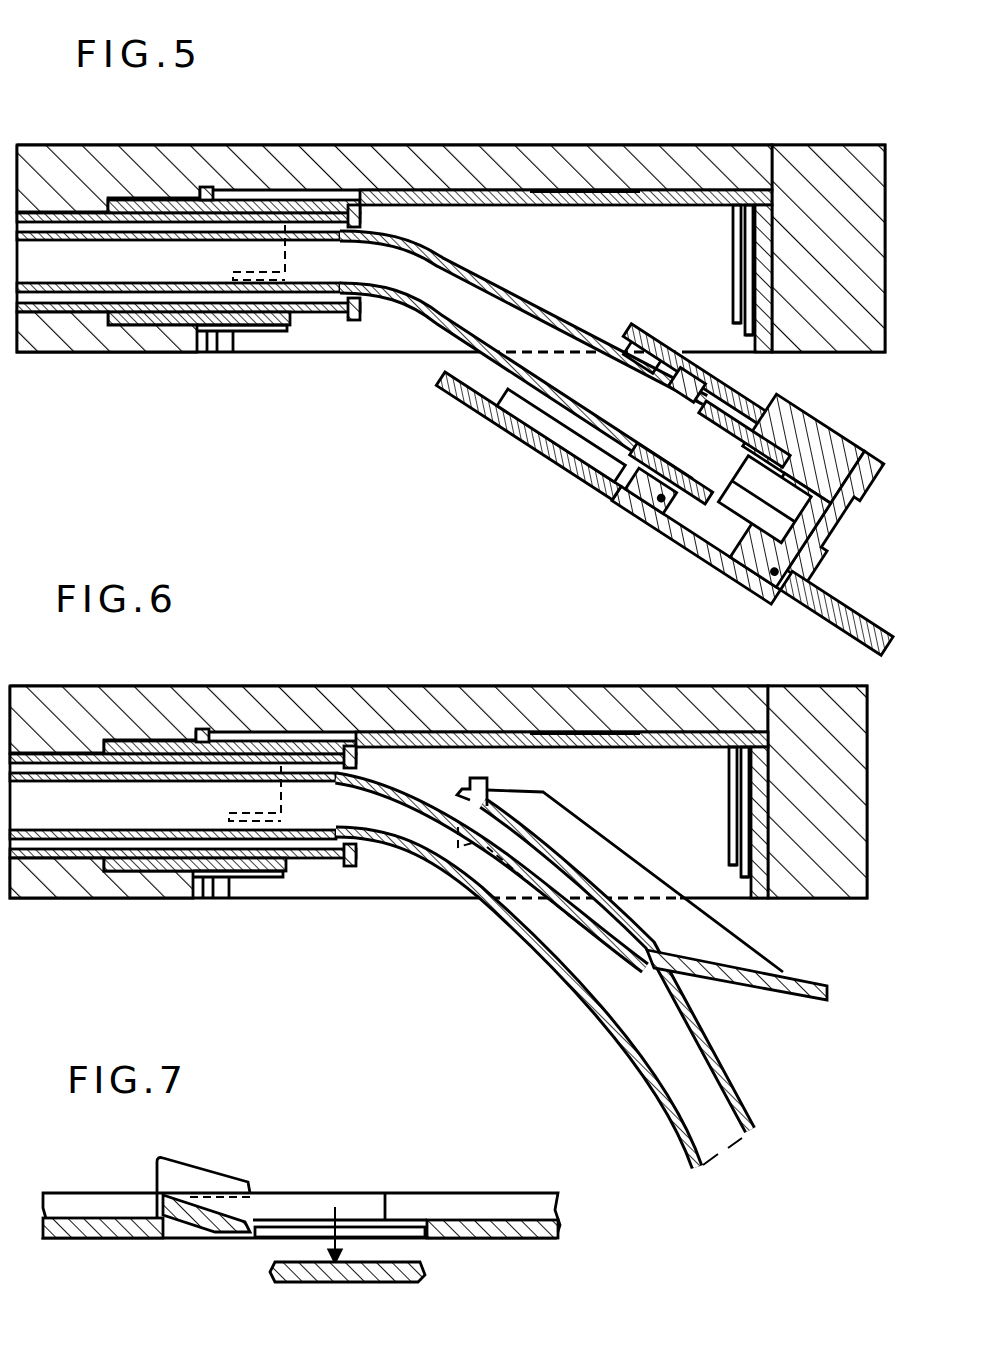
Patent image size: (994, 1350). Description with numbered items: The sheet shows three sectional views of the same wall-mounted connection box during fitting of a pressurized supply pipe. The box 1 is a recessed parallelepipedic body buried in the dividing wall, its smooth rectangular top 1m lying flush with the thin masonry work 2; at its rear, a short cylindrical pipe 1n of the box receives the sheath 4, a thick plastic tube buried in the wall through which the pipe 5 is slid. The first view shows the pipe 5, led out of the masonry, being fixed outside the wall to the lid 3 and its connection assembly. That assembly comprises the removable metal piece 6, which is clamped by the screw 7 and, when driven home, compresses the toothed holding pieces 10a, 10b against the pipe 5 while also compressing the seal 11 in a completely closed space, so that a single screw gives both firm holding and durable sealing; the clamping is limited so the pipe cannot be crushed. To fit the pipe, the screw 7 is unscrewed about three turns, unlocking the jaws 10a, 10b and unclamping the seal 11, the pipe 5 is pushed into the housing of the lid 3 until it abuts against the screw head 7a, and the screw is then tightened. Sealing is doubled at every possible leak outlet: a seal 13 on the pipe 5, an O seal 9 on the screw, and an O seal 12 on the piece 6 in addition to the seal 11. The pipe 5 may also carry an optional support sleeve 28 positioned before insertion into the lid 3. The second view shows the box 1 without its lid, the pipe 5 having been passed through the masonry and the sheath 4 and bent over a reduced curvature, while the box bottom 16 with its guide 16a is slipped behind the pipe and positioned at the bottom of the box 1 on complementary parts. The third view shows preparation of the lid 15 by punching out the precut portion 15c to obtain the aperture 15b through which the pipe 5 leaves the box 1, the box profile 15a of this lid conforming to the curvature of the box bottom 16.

In FIG. 6, the box 1 is at (400, 686).
In FIG. 6, the thin masonry work 2 is at (498, 686).
In FIG. 5, the smooth rectangular top 1m is at (258, 354).
In FIG. 6, the smooth rectangular top 1m is at (247, 898).
In FIG. 6, the short cylindrical pipe 1n is at (148, 898).
In FIG. 5, the lid 3 is at (530, 427).
In FIG. 6, the sheath 4 is at (92, 898).
In FIG. 5, the pipe 5 is at (418, 313).
In FIG. 6, the pipe 5 is at (558, 957).
In FIG. 5, the removable metal piece 6 is at (742, 600).
In FIG. 5, the screw 7 is at (830, 423).
In FIG. 5, the screw head 7a is at (752, 498).
In FIG. 5, the O seal 9 is at (855, 505).
In FIG. 5, the holding piece 10a is at (645, 497).
In FIG. 5, the holding piece 10b is at (770, 398).
In FIG. 5, the seal 11 is at (672, 553).
In FIG. 5, the O seal 12 is at (798, 615).
In FIG. 5, the seal 13 is at (728, 376).
In FIG. 5, the support sleeve 28 is at (688, 382).
In FIG. 6, the box bottom 16 is at (735, 983).
In FIG. 6, the guide 16a is at (480, 897).
In FIG. 7, the lid 15 is at (105, 1240).
In FIG. 7, the box profile 15a is at (222, 1174).
In FIG. 7, the aperture 15b is at (415, 1240).
In FIG. 7, the precut portion 15c is at (275, 1283).